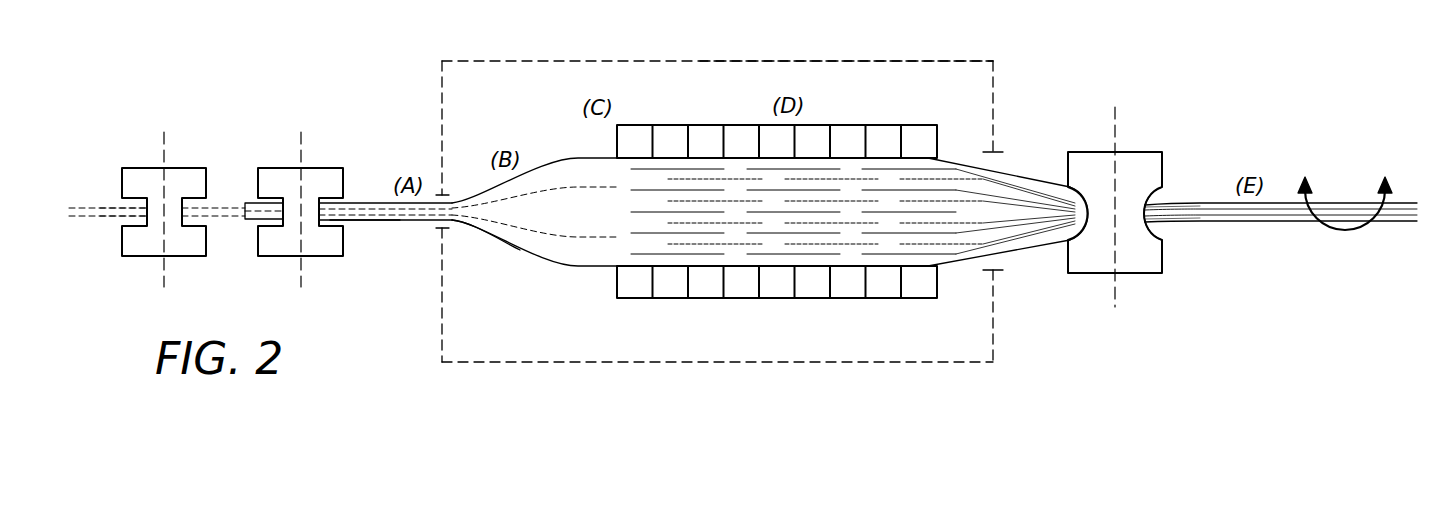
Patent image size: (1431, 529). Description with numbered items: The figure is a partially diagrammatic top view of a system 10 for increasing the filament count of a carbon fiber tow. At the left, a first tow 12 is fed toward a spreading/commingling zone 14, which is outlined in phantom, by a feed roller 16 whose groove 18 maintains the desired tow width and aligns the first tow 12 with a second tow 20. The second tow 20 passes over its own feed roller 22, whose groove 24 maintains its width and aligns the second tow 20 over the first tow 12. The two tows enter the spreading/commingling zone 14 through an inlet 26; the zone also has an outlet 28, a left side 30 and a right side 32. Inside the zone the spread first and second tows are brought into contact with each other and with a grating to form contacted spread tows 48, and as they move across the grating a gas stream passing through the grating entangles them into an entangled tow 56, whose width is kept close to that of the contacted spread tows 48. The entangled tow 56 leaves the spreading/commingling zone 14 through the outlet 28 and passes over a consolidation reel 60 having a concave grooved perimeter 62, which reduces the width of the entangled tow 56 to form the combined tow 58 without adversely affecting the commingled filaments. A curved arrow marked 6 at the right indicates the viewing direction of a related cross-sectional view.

The cross-section view direction arrow 6 is at (1345, 196).
The system 10 is at (1041, 70).
The first tow 12 is at (97, 206).
The spreading/commingling zone 14 is at (731, 61).
The feed roller 16 is at (176, 168).
The groove 18 is at (137, 221).
The second tow 20 is at (358, 203).
The feed roller 22 is at (270, 168).
The groove 24 is at (328, 222).
The inlet 26 is at (443, 227).
The outlet 28 is at (992, 162).
The left side 30 is at (600, 61).
The right side 32 is at (814, 363).
The contacted spread tows 48 is at (658, 163).
The entangled tow 56 is at (840, 158).
The combined tow 58 is at (1210, 222).
The consolidation reel 60 is at (1140, 152).
The grooved perimeter 62 is at (1150, 191).